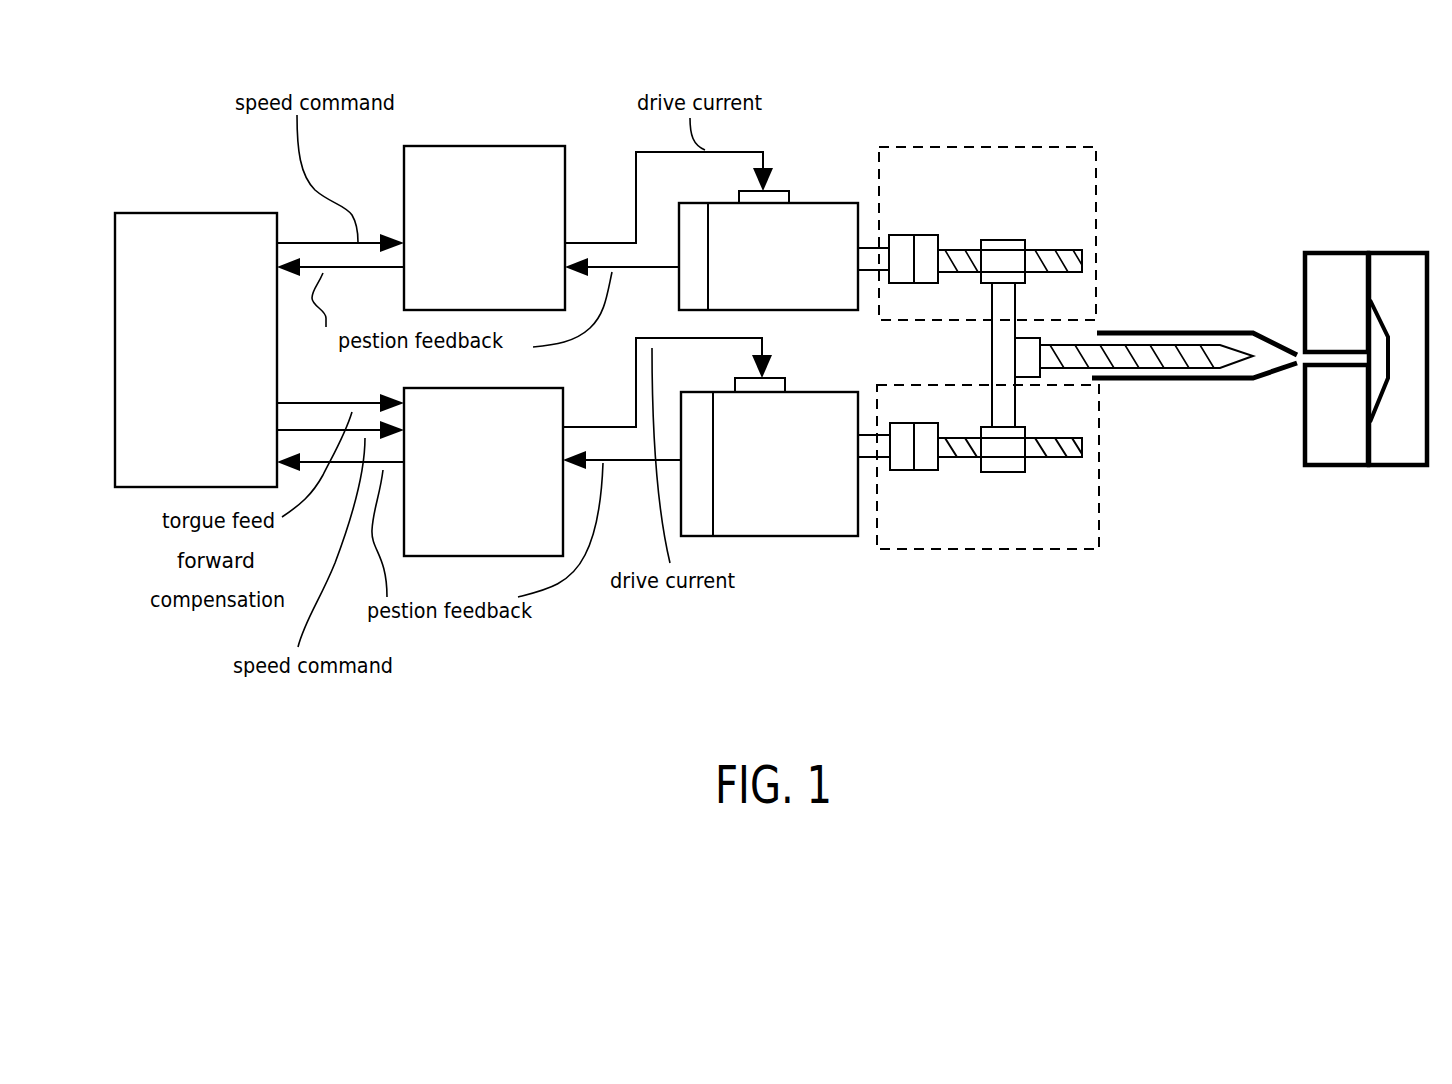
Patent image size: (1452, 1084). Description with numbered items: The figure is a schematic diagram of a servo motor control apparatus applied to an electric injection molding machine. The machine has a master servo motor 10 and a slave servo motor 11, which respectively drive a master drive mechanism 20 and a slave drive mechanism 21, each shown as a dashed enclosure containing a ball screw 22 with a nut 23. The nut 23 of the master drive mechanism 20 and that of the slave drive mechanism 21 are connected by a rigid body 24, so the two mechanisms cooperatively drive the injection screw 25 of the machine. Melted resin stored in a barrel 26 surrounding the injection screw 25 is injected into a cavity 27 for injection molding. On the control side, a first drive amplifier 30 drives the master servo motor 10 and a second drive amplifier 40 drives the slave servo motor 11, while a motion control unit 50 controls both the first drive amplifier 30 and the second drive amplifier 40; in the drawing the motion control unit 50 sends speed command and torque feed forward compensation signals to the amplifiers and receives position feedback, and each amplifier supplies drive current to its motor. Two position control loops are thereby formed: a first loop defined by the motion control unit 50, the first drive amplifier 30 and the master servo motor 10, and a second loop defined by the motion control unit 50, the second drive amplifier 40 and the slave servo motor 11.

The master servo motor 10 is at (846, 224).
The slave servo motor 11 is at (828, 520).
The master drive mechanism 20 is at (1067, 176).
The slave drive mechanism 21 is at (1078, 495).
The ball screw 22 is at (1073, 252).
The nut 23 is at (1005, 256).
The rigid body 24 is at (1006, 372).
The injection screw 25 is at (1131, 358).
The barrel 26 is at (1217, 380).
The cavity 27 is at (1378, 325).
The first drive amplifier 30 is at (535, 160).
The second drive amplifier 40 is at (492, 399).
The motion control unit 50 is at (182, 234).